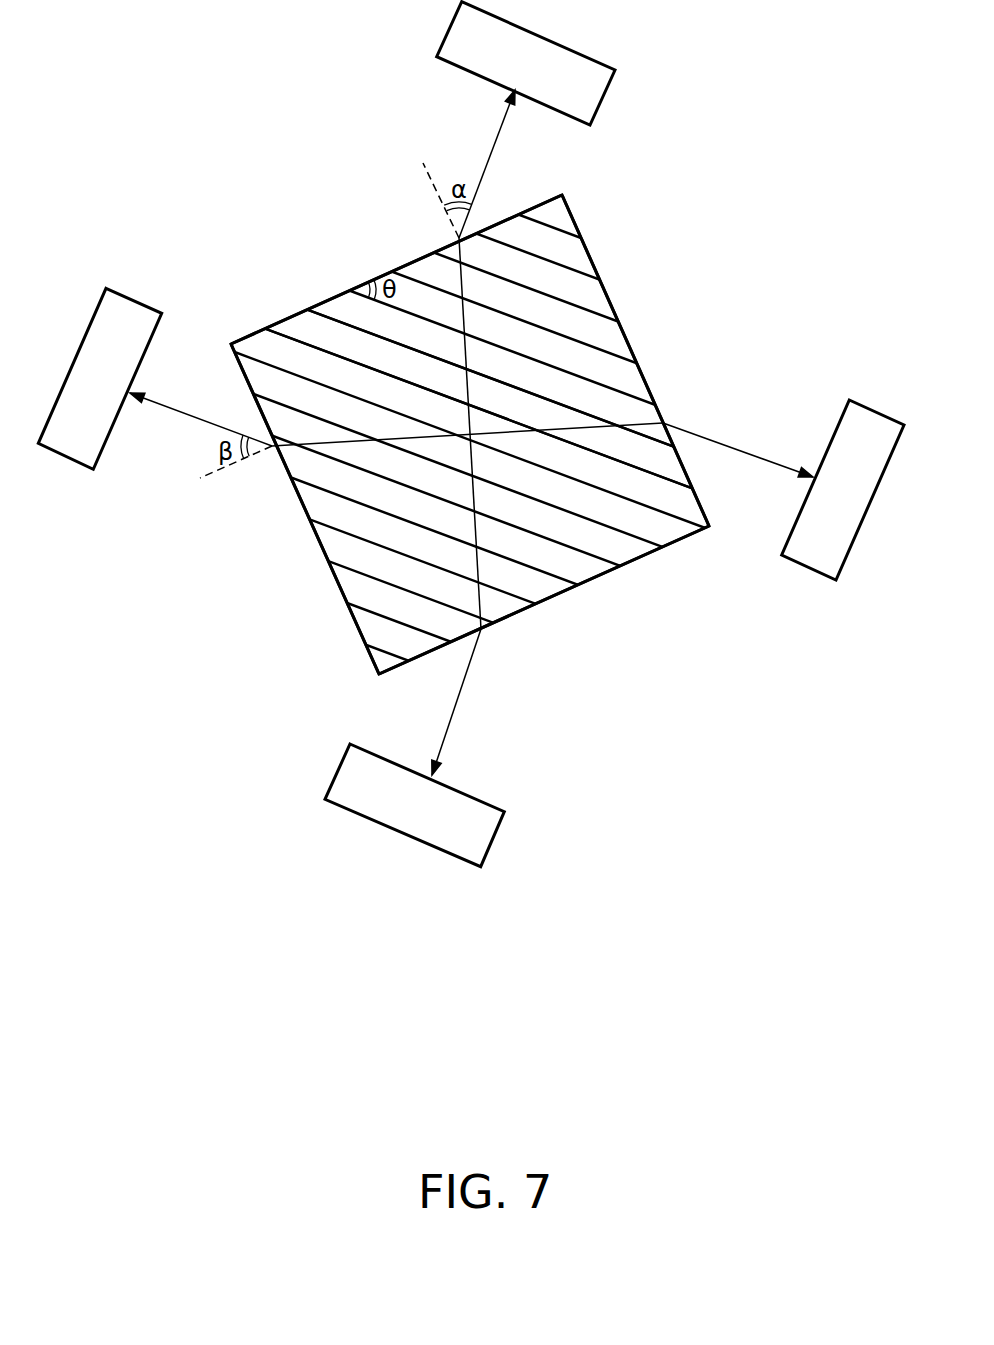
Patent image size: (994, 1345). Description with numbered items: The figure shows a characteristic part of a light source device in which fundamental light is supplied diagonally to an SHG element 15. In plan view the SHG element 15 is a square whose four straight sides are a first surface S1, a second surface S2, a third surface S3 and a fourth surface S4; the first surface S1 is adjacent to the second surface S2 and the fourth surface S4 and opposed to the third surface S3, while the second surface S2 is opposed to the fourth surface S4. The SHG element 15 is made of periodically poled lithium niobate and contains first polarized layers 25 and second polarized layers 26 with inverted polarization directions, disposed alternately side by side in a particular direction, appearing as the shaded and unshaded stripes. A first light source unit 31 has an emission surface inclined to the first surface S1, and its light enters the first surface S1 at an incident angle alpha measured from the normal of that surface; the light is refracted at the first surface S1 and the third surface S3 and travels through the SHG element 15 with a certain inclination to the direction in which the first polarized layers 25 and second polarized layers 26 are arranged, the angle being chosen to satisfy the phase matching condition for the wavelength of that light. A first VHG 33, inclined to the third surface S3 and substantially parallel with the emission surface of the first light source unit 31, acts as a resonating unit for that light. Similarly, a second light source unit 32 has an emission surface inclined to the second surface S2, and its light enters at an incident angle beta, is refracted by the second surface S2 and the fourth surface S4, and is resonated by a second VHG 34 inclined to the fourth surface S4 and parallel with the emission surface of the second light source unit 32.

The SHG element 15 is at (240, 302).
The first polarized layers 25 is at (622, 338).
The second polarized layers 26 is at (640, 375).
The first light source unit 31 is at (548, 38).
The second light source unit 32 is at (106, 440).
The first VHG 33 is at (495, 840).
The second VHG 34 is at (876, 408).
The first surface S1 is at (320, 305).
The second surface S2 is at (311, 527).
The third surface S3 is at (558, 598).
The fourth surface S4 is at (592, 255).